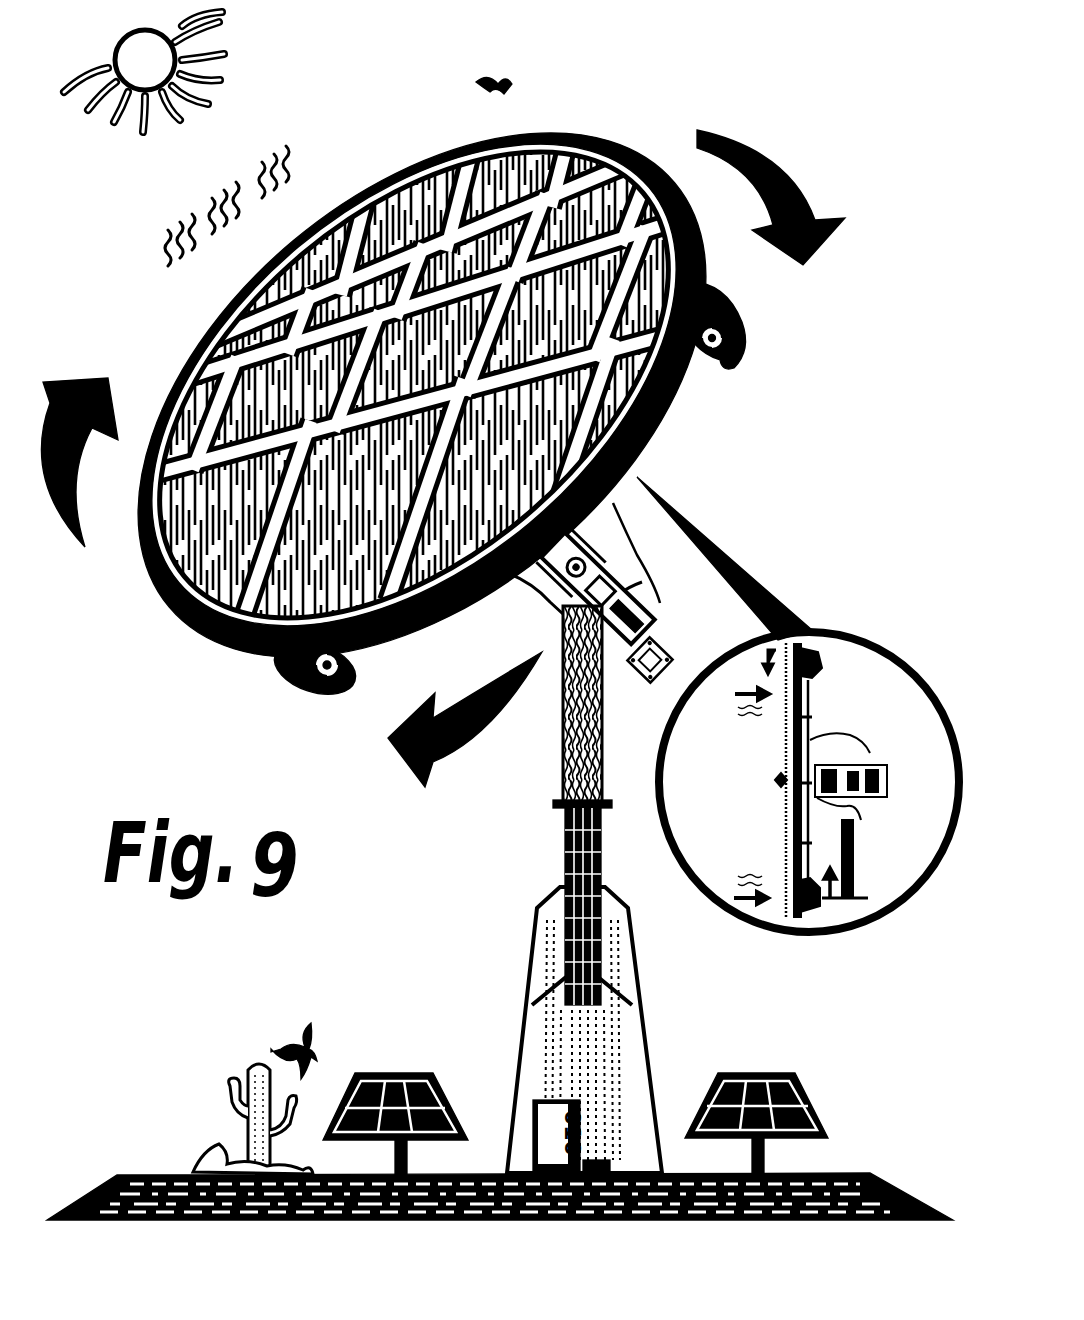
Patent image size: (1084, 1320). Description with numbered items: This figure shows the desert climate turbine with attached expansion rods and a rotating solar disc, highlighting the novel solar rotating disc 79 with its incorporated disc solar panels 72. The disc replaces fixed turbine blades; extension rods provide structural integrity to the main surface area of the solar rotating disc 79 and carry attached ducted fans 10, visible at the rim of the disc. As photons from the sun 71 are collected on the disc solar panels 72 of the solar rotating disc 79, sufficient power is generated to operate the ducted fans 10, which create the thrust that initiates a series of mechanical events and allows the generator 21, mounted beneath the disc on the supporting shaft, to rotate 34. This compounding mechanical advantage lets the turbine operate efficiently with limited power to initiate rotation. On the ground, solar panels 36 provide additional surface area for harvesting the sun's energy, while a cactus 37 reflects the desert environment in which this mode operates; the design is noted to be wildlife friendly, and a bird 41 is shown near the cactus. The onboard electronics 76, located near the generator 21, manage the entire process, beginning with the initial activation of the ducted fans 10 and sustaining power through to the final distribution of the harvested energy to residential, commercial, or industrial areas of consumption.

The ducted fans 10 is at (347, 690).
The generator 21 is at (637, 588).
The rotate 34 is at (58, 536).
The ground solar panels 36 is at (436, 1070).
The cactus 37 is at (246, 1064).
The bird 41 is at (310, 1042).
The sun 71 is at (120, 162).
The disc solar panels 72 is at (216, 318).
The onboard electronics 76 is at (653, 687).
The solar rotating disc 79 is at (603, 136).